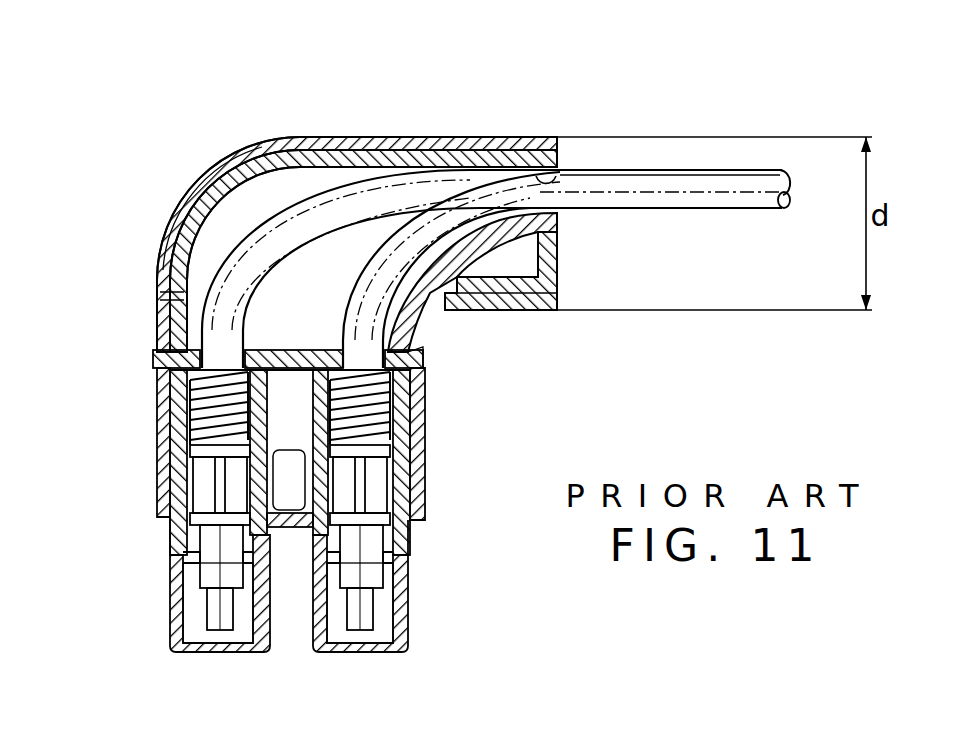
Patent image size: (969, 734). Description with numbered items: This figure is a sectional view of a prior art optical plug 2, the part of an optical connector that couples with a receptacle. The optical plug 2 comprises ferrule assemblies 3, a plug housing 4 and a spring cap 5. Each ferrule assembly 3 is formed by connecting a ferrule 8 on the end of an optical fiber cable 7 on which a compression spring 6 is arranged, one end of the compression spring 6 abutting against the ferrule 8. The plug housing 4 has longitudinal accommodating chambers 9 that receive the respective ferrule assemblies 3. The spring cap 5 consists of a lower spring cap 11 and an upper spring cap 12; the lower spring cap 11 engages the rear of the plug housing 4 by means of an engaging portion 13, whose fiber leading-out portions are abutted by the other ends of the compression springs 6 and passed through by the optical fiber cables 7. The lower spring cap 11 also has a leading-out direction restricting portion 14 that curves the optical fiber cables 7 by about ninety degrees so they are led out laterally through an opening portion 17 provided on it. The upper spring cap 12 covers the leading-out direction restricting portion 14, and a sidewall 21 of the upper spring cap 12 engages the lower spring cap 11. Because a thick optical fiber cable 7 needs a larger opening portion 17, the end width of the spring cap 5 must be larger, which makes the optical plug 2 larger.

The optical plug 2 is at (150, 142).
The spring cap 5 is at (232, 55).
The upper spring cap 12 is at (263, 143).
The lower spring cap 11 is at (370, 143).
The sidewall 21 is at (187, 200).
The leading-out direction restricting portion 14 is at (205, 282).
The opening portion 17 is at (548, 178).
The optical fiber cable 7 is at (640, 195).
The engaging portion 13 is at (157, 430).
The compression spring 6 is at (157, 393).
The ferrule 8 is at (212, 482).
The plug housing 4 is at (170, 612).
The ferrule assembly 3 is at (185, 570).
The accommodating chamber 9 is at (203, 637).